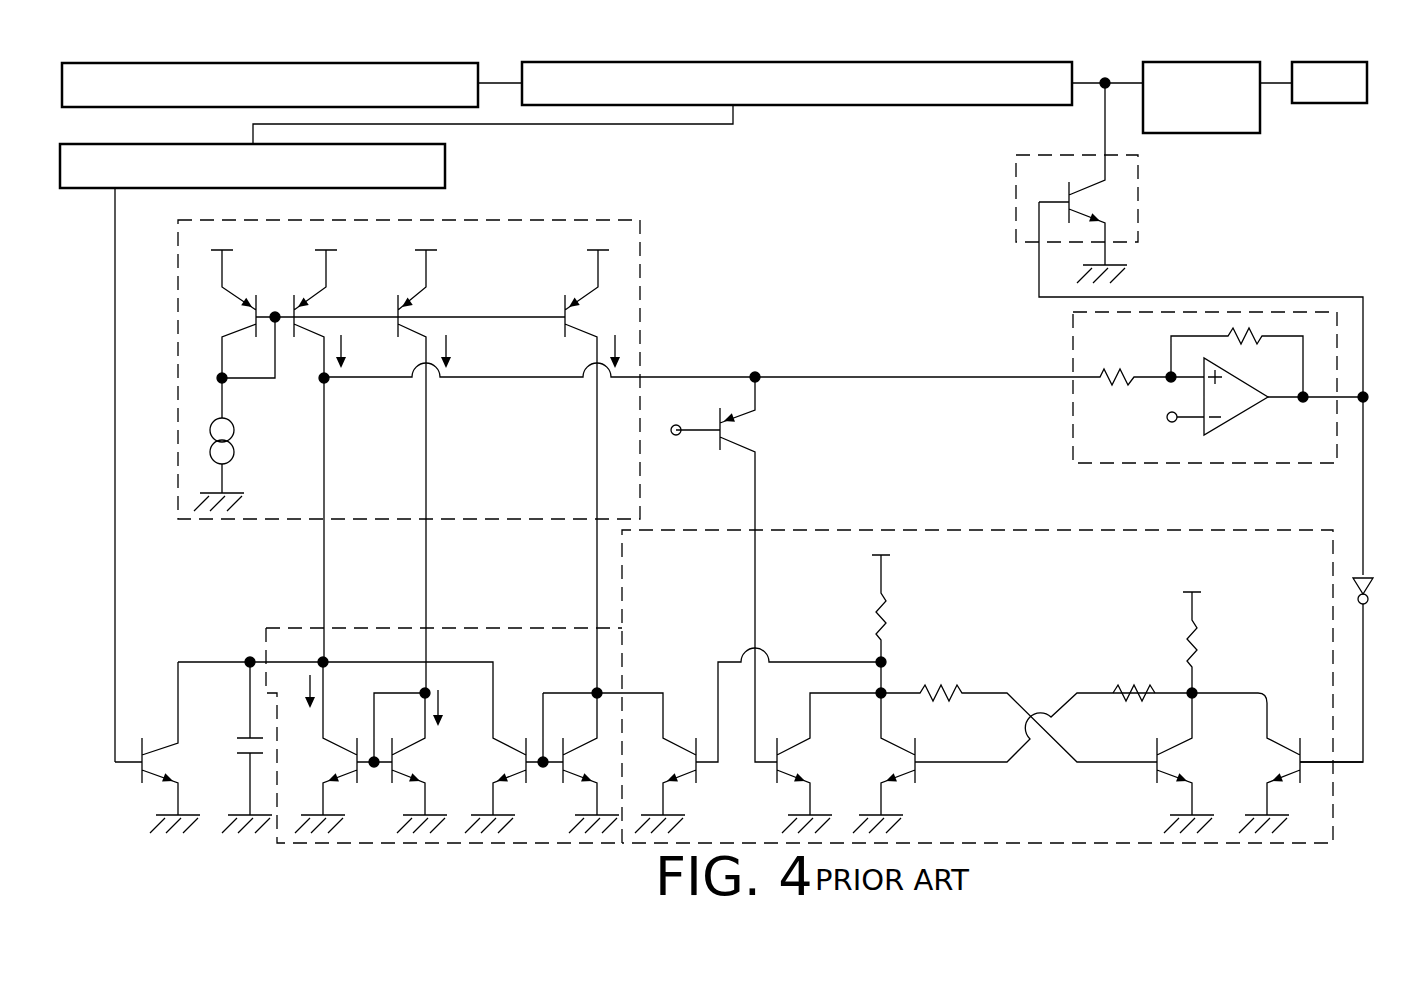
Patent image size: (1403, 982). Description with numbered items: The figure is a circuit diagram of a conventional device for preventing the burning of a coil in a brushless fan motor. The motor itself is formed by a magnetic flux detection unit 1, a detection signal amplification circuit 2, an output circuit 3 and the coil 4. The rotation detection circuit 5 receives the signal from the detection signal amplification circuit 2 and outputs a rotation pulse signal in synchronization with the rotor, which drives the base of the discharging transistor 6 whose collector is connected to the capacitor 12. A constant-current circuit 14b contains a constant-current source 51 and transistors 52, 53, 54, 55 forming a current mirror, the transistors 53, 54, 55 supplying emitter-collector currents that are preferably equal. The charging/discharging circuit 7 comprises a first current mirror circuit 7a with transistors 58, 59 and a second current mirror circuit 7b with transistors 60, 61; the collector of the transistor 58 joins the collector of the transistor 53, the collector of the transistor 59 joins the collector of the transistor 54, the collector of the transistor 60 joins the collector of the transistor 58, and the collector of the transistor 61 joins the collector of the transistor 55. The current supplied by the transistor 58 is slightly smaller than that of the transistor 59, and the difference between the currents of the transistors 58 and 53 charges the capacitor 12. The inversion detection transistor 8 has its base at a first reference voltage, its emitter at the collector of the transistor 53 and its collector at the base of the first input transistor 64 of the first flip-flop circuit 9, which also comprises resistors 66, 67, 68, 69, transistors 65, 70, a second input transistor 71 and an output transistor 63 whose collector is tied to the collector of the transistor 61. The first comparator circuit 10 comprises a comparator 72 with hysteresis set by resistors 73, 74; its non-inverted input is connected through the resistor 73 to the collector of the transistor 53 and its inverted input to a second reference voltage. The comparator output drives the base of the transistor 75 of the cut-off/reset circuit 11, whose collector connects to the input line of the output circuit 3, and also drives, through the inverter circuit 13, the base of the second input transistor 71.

The magnetic flux detection unit 1 is at (300, 63).
The detection signal amplification circuit 2 is at (640, 62).
The output circuit 3 is at (1216, 62).
The coil 4 is at (1353, 62).
The rotation detection circuit 5 is at (447, 165).
The discharging transistor 6 is at (155, 762).
The charging/discharging circuit 7 is at (438, 843).
The first current mirror circuit 7a is at (368, 818).
The second current mirror circuit 7b is at (540, 818).
The inversion detection transistor 8 is at (737, 432).
The first flip-flop circuit 9 is at (1018, 838).
The first comparator circuit 10 is at (1215, 312).
The cut-off/reset circuit 11 is at (1048, 155).
The capacitor 12 is at (237, 750).
The inverter circuit 13 is at (1368, 588).
The constant-current circuit 14b is at (475, 220).
The constant-current source 51 is at (234, 450).
The transistor 52 is at (250, 317).
The transistor 53 is at (300, 317).
The transistor 54 is at (405, 317).
The transistor 55 is at (575, 317).
The transistor 58 is at (357, 745).
The transistor 59 is at (408, 773).
The transistor 60 is at (518, 773).
The transistor 61 is at (578, 773).
The output transistor 63 is at (700, 775).
The first input transistor 64 is at (790, 762).
The transistor 65 is at (897, 778).
The resistor 66 is at (950, 688).
The resistor 67 is at (890, 625).
The resistor 68 is at (1190, 636).
The resistor 69 is at (1136, 690).
The transistor 70 is at (1172, 775).
The second input transistor 71 is at (1290, 757).
The comparator 72 is at (1246, 417).
The resistor 73 is at (1102, 373).
The resistor 74 is at (1255, 330).
The transistor 75 is at (1085, 205).